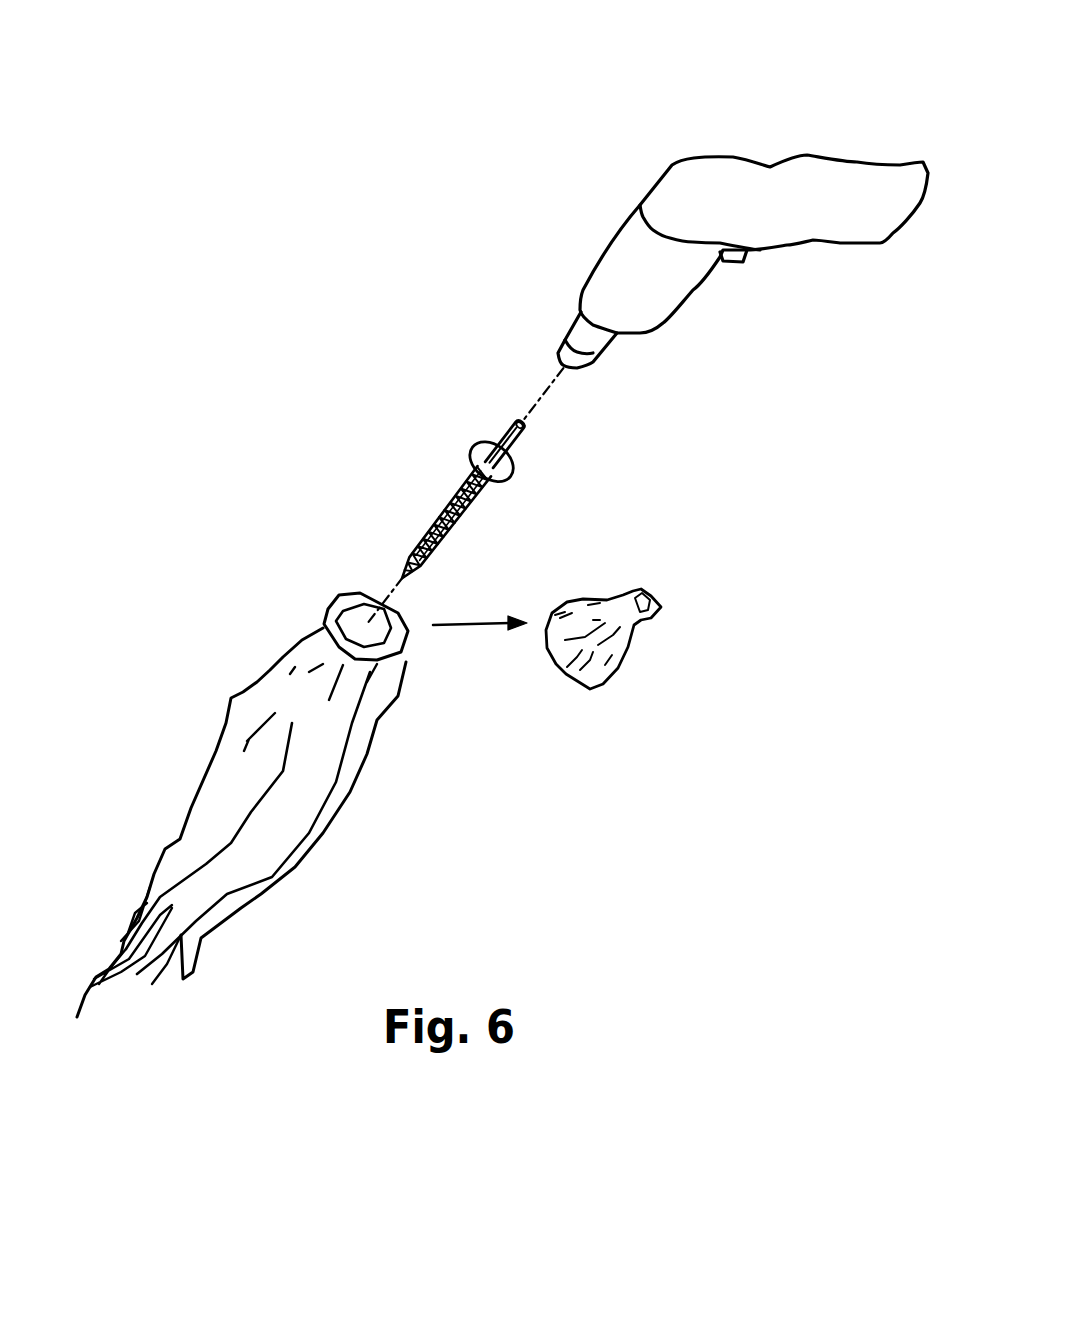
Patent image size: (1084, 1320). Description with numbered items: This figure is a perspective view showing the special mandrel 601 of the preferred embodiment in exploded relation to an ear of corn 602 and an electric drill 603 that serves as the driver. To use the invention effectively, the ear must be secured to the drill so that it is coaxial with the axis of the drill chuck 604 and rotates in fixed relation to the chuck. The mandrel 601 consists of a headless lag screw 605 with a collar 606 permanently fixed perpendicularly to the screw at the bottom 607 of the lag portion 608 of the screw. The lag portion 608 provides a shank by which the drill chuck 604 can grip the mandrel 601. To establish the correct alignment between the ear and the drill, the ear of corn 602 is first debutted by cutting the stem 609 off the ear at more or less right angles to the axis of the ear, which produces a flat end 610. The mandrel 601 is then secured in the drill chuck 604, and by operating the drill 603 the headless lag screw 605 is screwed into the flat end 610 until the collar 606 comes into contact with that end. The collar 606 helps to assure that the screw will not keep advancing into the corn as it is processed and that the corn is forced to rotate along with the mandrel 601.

The special mandrel 601 is at (432, 450).
The ear of corn 602 is at (298, 773).
The electric drill 603 is at (712, 180).
The drill chuck 604 is at (580, 328).
The headless lag screw 605 is at (453, 528).
The collar 606 is at (509, 467).
The bottom of the lag portion 607 is at (539, 504).
The lag portion 608 is at (522, 433).
The stem 609 is at (602, 643).
The flat end 610 is at (372, 632).